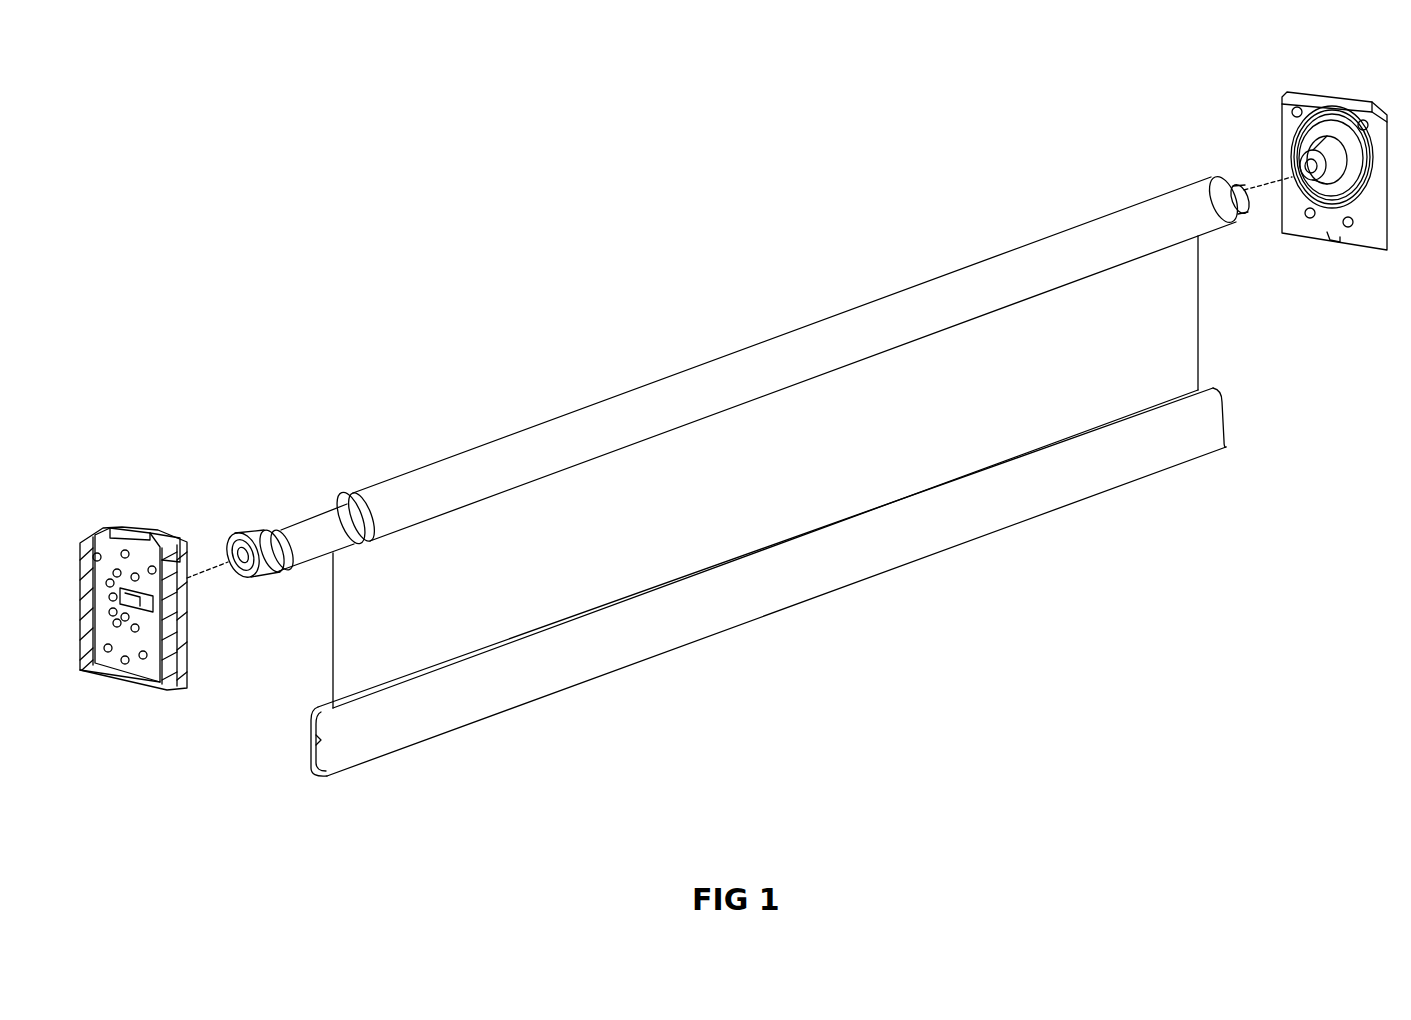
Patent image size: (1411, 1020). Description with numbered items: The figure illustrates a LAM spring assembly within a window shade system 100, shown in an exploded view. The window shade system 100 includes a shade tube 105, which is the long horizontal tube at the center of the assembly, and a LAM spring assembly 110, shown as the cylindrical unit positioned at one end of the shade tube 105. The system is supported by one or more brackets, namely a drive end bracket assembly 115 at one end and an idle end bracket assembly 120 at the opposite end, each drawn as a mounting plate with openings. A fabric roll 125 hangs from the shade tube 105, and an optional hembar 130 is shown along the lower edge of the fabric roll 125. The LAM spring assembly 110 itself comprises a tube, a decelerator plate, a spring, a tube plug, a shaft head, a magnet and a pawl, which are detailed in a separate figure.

The window shade system 100 is at (604, 286).
The shade tube 105 is at (1218, 167).
The LAM spring assembly 110 is at (303, 432).
The drive end bracket assembly 115 is at (1293, 83).
The idle end bracket assembly 120 is at (150, 524).
The fabric roll 125 is at (1093, 208).
The hembar 130 is at (1088, 512).